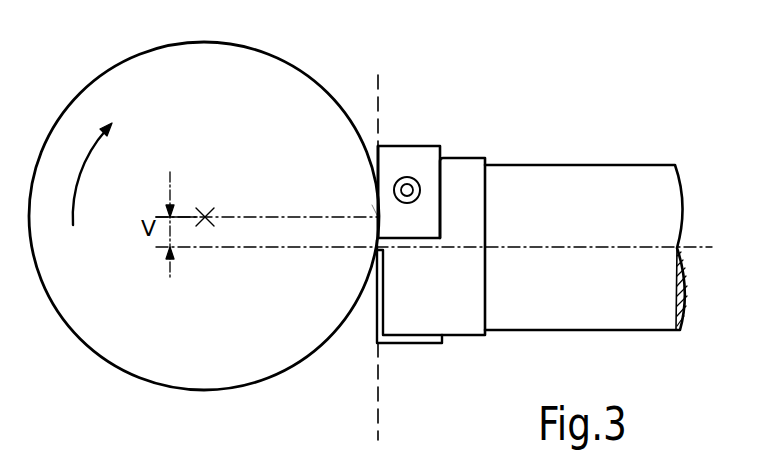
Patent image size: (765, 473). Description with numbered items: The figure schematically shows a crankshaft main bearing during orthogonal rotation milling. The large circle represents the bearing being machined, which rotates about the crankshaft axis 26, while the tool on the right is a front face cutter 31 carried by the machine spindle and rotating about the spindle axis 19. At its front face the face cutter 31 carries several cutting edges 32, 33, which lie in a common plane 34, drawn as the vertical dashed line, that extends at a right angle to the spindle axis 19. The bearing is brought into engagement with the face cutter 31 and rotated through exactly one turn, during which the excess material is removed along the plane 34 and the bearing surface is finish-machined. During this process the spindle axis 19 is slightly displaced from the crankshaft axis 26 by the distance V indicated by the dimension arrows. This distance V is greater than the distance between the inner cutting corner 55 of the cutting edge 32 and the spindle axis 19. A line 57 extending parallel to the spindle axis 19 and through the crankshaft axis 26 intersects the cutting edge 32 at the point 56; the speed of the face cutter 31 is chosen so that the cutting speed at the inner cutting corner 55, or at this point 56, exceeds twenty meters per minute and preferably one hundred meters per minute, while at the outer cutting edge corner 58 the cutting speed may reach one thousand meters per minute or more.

The spindle axis 19 is at (574, 248).
The crankshaft axis 26 is at (203, 210).
The front face cutter 31 is at (472, 142).
The cutting edge 32 is at (373, 148).
The cutting edge 33 is at (373, 326).
The common plane 34 is at (377, 425).
The inner cutting corner 55 is at (380, 234).
The point 56 is at (369, 209).
The line 57 is at (272, 216).
The outer cutting edge corner 58 is at (386, 136).